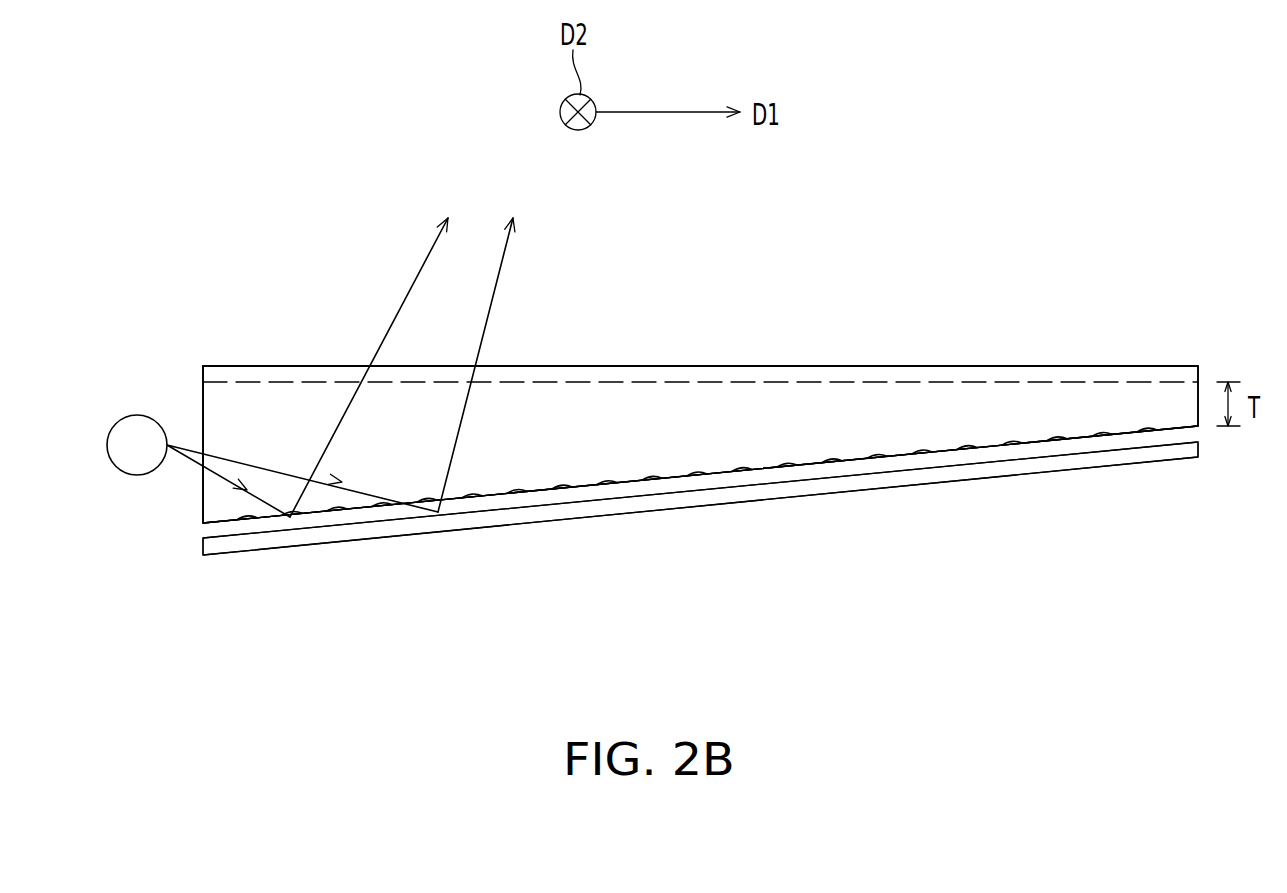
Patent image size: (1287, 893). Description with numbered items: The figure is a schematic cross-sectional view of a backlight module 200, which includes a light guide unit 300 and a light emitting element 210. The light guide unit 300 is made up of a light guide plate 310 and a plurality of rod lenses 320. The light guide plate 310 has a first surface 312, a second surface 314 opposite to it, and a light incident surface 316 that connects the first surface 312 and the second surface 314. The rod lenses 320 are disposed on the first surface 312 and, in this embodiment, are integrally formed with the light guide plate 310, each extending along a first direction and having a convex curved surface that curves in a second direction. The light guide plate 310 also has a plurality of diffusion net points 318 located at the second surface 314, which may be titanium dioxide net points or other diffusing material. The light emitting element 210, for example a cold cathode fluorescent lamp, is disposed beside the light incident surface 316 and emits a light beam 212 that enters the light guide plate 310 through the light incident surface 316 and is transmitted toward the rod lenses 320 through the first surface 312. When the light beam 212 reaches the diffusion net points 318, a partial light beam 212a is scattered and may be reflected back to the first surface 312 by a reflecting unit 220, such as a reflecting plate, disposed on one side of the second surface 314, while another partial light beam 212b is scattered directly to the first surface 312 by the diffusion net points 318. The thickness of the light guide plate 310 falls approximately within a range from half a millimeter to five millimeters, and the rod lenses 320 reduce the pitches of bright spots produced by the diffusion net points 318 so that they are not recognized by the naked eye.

The backlight module 200 is at (1277, 575).
The light emitting element 210 is at (138, 435).
The light beam 212 is at (188, 458).
The partial light beam 212a is at (495, 295).
The partial light beam 212b is at (398, 308).
The reflecting unit 220 is at (240, 542).
The light guide unit 300 is at (978, 291).
The light guide plate 310 is at (963, 402).
The first surface 312 is at (803, 376).
The second surface 314 is at (630, 490).
The light incident surface 316 is at (196, 408).
The diffusion net points 318 is at (515, 497).
The rod lenses 320 is at (887, 375).